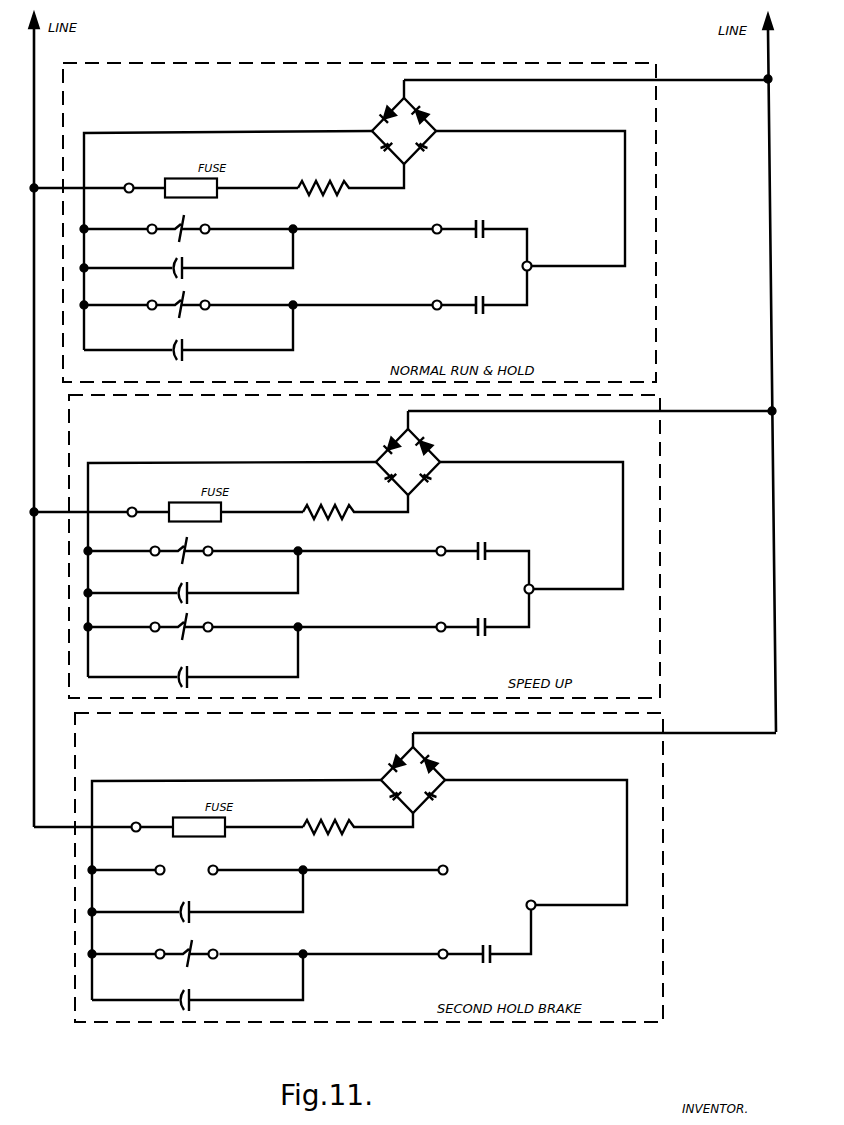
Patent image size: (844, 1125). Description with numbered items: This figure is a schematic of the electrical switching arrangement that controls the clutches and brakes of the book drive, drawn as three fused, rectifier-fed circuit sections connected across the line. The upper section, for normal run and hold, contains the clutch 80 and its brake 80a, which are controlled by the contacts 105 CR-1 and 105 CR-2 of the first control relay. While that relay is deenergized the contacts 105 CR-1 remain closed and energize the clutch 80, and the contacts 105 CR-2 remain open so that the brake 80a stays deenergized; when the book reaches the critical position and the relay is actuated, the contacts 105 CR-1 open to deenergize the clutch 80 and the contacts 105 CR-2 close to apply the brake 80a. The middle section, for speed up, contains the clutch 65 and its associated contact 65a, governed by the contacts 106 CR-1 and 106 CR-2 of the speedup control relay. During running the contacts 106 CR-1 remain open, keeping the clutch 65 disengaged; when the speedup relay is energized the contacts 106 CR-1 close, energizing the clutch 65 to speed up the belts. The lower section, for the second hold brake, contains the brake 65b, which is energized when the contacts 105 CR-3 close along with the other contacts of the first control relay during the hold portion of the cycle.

The clutch 80 is at (178, 223).
The brake 80a is at (187, 298).
The contacts of relay 105 CR 105 CR-1 is at (492, 204).
The contacts of relay 105 CR 105 CR-2 is at (482, 313).
The contacts of relay 105 CR 105 CR-3 is at (482, 940).
The clutch 65 is at (189, 546).
The auxiliary contact of clutch 65 circuit 65a is at (190, 622).
The brake 65b is at (194, 941).
The contacts of relay 106 CR 106 CR-1 is at (493, 533).
The contacts of relay 106 CR 106 CR-2 is at (484, 635).